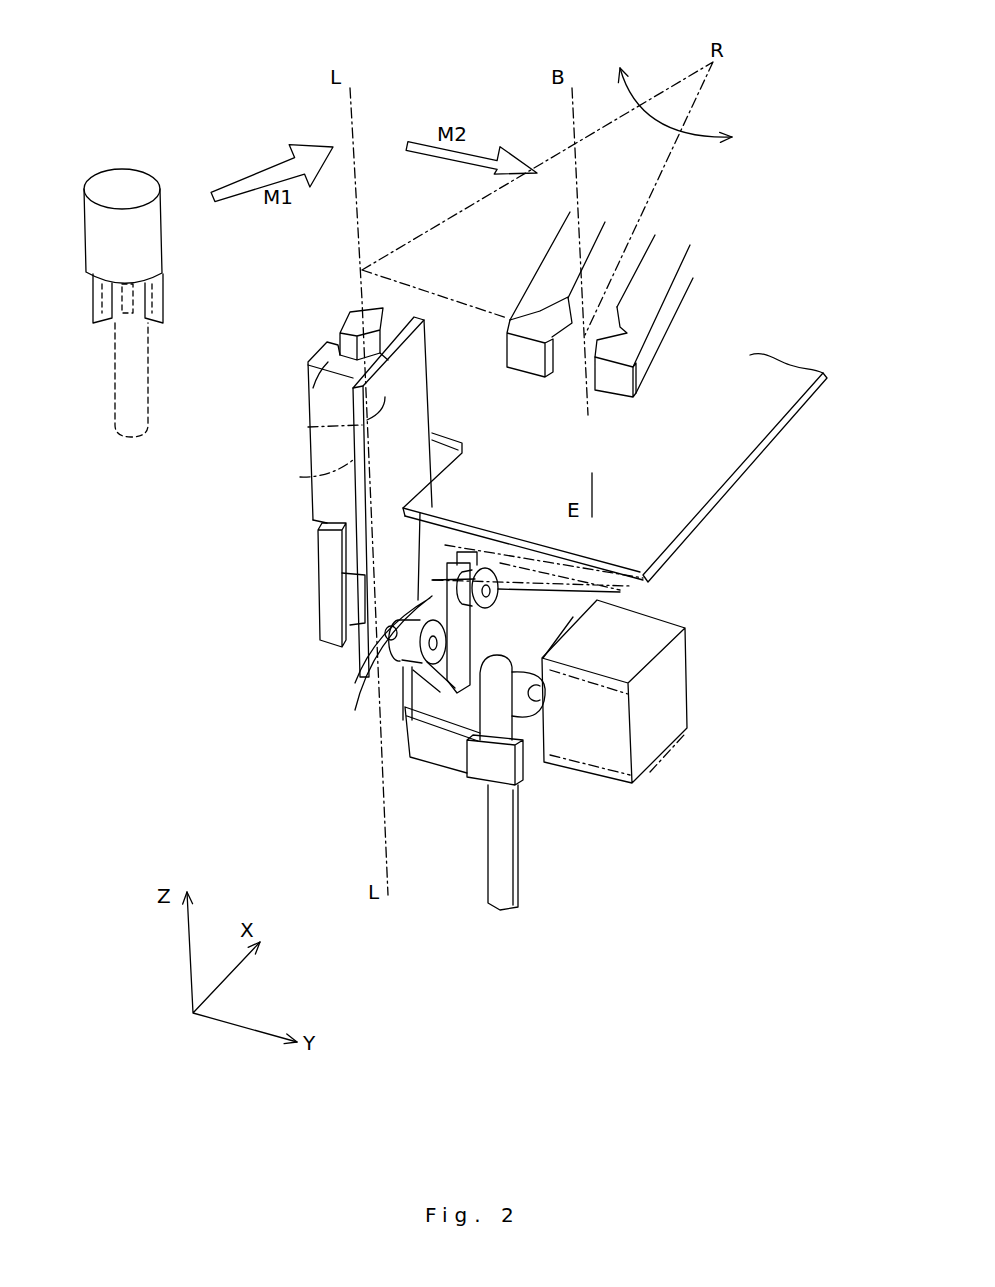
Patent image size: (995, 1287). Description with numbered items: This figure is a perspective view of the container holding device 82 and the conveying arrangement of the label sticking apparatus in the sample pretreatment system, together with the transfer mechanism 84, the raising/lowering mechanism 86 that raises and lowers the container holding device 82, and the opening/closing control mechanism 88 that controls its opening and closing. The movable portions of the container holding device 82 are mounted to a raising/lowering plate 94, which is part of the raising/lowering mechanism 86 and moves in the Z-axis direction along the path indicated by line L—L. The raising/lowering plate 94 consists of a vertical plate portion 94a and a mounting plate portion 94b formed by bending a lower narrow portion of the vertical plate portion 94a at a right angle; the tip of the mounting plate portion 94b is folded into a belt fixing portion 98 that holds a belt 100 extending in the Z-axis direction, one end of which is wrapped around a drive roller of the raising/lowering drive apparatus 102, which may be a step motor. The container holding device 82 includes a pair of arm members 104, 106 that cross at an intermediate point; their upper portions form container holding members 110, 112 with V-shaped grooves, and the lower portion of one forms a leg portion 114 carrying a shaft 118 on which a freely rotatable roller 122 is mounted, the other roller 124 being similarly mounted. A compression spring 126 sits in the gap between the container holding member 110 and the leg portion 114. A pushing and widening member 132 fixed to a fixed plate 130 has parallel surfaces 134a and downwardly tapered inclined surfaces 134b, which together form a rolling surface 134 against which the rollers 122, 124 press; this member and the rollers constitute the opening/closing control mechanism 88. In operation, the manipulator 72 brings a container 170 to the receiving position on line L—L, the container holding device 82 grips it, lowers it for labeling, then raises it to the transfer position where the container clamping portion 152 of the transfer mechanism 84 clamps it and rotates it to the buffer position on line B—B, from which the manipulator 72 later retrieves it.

The manipulator 72 is at (130, 178).
The container 170 is at (113, 360).
The container holding device 82 is at (266, 366).
The transfer mechanism 84 is at (701, 317).
The raising/lowering mechanism 86 is at (604, 838).
The opening/closing control mechanism 88 is at (215, 769).
The raising/lowering plate 94 is at (357, 463).
The vertical plate portion 94a is at (307, 424).
The mounting plate portion 94b is at (437, 750).
The belt fixing portion 98 is at (480, 787).
The belt 100 is at (503, 865).
The raising/lowering drive apparatus 102 is at (663, 722).
The arm member 104 is at (343, 312).
The arm member 106 is at (313, 512).
The container holding member 110 is at (308, 398).
The container holding member 112 is at (393, 318).
The leg portion 114 is at (327, 607).
The shaft 118 is at (352, 657).
The roller 122 is at (430, 598).
The roller 124 is at (497, 603).
The compression spring 126 is at (318, 565).
The fixed plate 130 is at (740, 470).
The pushing and widening member 132 is at (645, 580).
The rolling surface 134 is at (618, 593).
The parallel surface 134a is at (373, 660).
The inclined surface 134b is at (390, 742).
The container clamping portion 152 is at (598, 408).